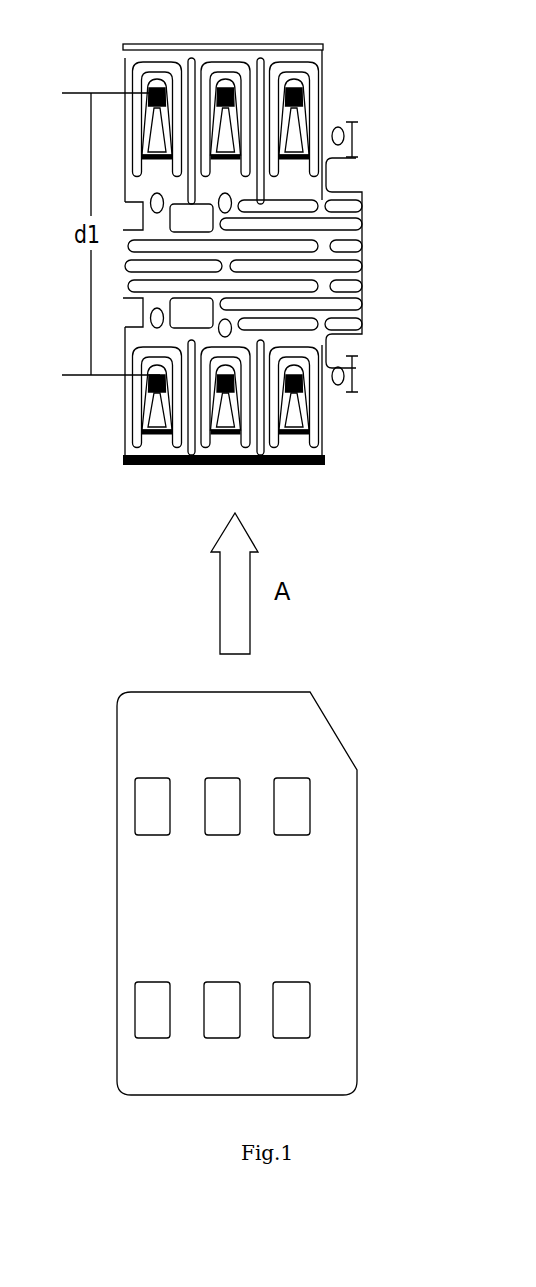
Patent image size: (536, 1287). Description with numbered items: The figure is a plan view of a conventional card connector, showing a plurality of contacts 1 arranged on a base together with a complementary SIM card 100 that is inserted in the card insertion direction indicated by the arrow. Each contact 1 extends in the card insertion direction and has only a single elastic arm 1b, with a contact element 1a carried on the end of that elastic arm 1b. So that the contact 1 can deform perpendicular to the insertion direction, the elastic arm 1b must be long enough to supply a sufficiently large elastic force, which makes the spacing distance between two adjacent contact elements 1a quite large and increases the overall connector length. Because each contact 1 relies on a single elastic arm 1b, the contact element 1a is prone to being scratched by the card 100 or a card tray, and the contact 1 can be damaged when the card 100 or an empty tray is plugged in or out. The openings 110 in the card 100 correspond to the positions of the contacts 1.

The contact 1 is at (278, 244).
The contact element 1a is at (297, 92).
The elastic arm 1b is at (297, 142).
The card 100 is at (315, 923).
The opening 110 is at (293, 805).